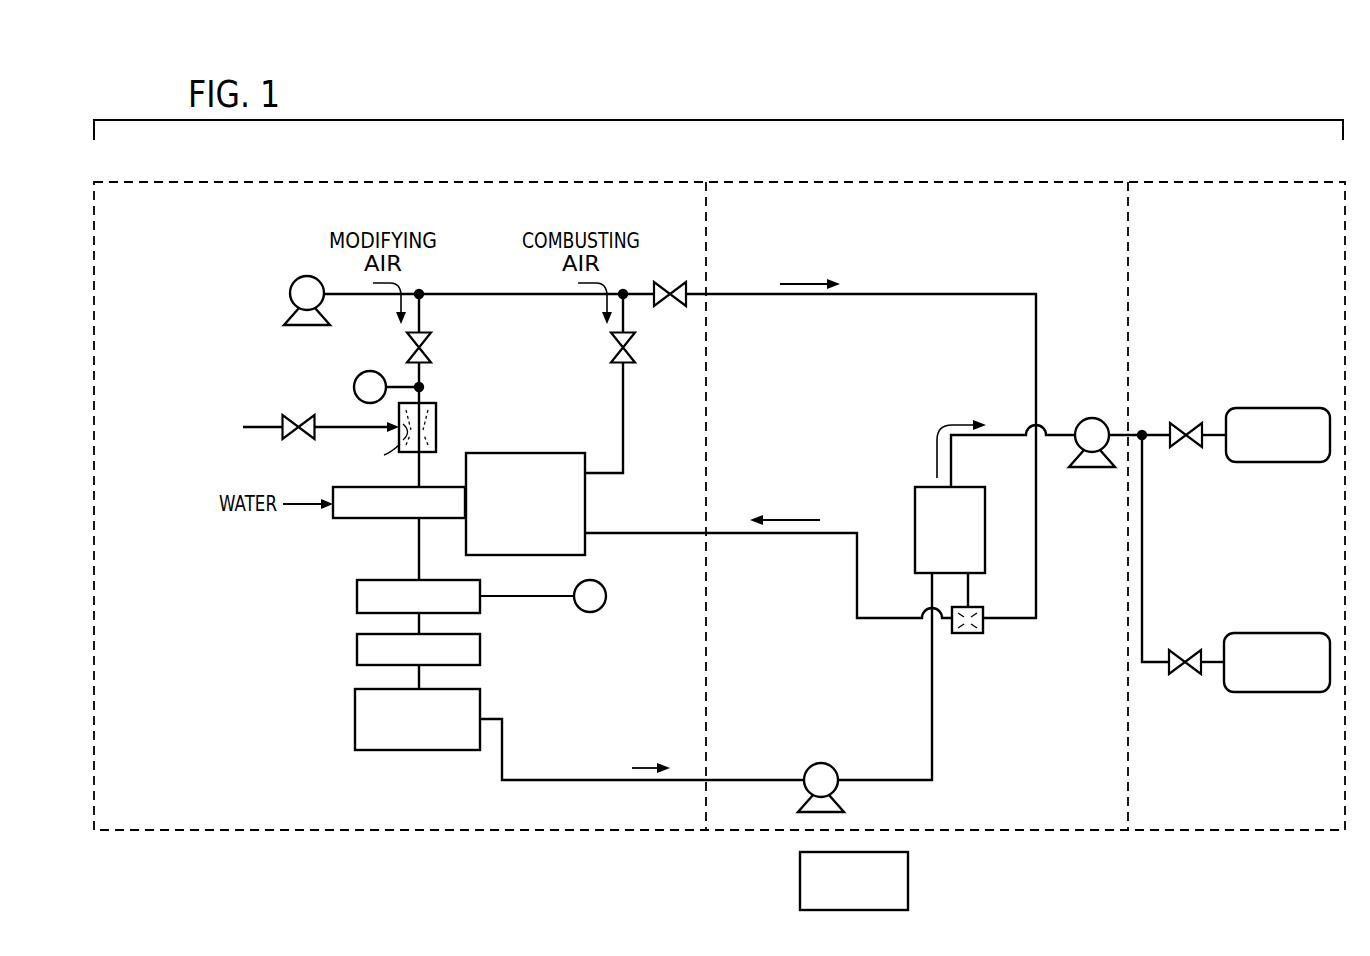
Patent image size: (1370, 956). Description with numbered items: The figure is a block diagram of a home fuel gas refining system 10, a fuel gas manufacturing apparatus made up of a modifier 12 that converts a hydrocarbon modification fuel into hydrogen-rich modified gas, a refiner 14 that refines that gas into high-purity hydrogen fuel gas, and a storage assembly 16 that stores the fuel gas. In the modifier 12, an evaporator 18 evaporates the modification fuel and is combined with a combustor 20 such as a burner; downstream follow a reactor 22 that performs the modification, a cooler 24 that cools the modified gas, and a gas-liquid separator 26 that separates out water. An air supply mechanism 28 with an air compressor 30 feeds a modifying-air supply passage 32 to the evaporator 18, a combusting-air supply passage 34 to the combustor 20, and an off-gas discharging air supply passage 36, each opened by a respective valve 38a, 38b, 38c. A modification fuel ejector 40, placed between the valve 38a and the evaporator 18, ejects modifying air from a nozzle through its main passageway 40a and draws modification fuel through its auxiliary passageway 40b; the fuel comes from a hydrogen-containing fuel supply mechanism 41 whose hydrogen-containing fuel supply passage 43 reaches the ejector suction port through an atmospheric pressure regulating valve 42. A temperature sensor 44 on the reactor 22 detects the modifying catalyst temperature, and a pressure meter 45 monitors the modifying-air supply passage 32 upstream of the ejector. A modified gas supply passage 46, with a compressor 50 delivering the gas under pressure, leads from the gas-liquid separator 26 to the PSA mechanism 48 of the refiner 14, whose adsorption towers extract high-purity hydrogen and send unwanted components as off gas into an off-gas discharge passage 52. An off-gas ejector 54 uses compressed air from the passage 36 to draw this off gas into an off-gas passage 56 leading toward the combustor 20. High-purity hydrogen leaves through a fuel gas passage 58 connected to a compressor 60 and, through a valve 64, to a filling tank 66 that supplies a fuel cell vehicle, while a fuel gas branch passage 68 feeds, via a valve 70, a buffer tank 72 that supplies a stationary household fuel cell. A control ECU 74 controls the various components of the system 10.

The home fuel gas refining system 10 is at (378, 160).
The modifier 12 is at (585, 182).
The refiner 14 is at (997, 182).
The storage assembly 16 is at (1275, 182).
The evaporator 18 is at (442, 521).
The combustor 20 is at (588, 503).
The reactor 22 is at (374, 580).
The cooler 24 is at (354, 652).
The gas-liquid separator 26 is at (353, 708).
The air supply mechanism 28 is at (336, 283).
The air compressor 30 is at (319, 328).
The modifying-air supply passage 32 is at (423, 375).
The combusting-air supply passage 34 is at (627, 463).
The off-gas discharging air supply passage 36 is at (874, 294).
The valve 38a is at (408, 348).
The valve 38b is at (612, 348).
The valve 38c is at (670, 308).
The modification fuel ejector 40 is at (437, 413).
The main passageway 40a is at (437, 439).
The auxiliary passageway 40b is at (378, 461).
The hydrogen-containing fuel supply mechanism 41 is at (271, 400).
The atmospheric pressure regulating valve 42 is at (298, 443).
The hydrogen-containing fuel supply passage 43 is at (339, 432).
The temperature sensor 44 is at (607, 596).
The pressure meter 45 is at (354, 387).
The modified gas supply passage 46 is at (500, 776).
The PSA mechanism 48 is at (931, 482).
The compressor 50 is at (821, 764).
The off-gas discharge passage 52 is at (971, 595).
The off-gas ejector 54 is at (968, 636).
The off-gas passage 56 is at (855, 596).
The fuel gas passage 58 is at (990, 434).
The compressor 60 is at (1091, 419).
The valve 64 is at (1186, 450).
The filling tank 66 is at (1305, 408).
The fuel gas branch passage 68 is at (1145, 518).
The valve 70 is at (1185, 677).
The buffer tank 72 is at (1303, 634).
The control ECU 74 is at (910, 881).